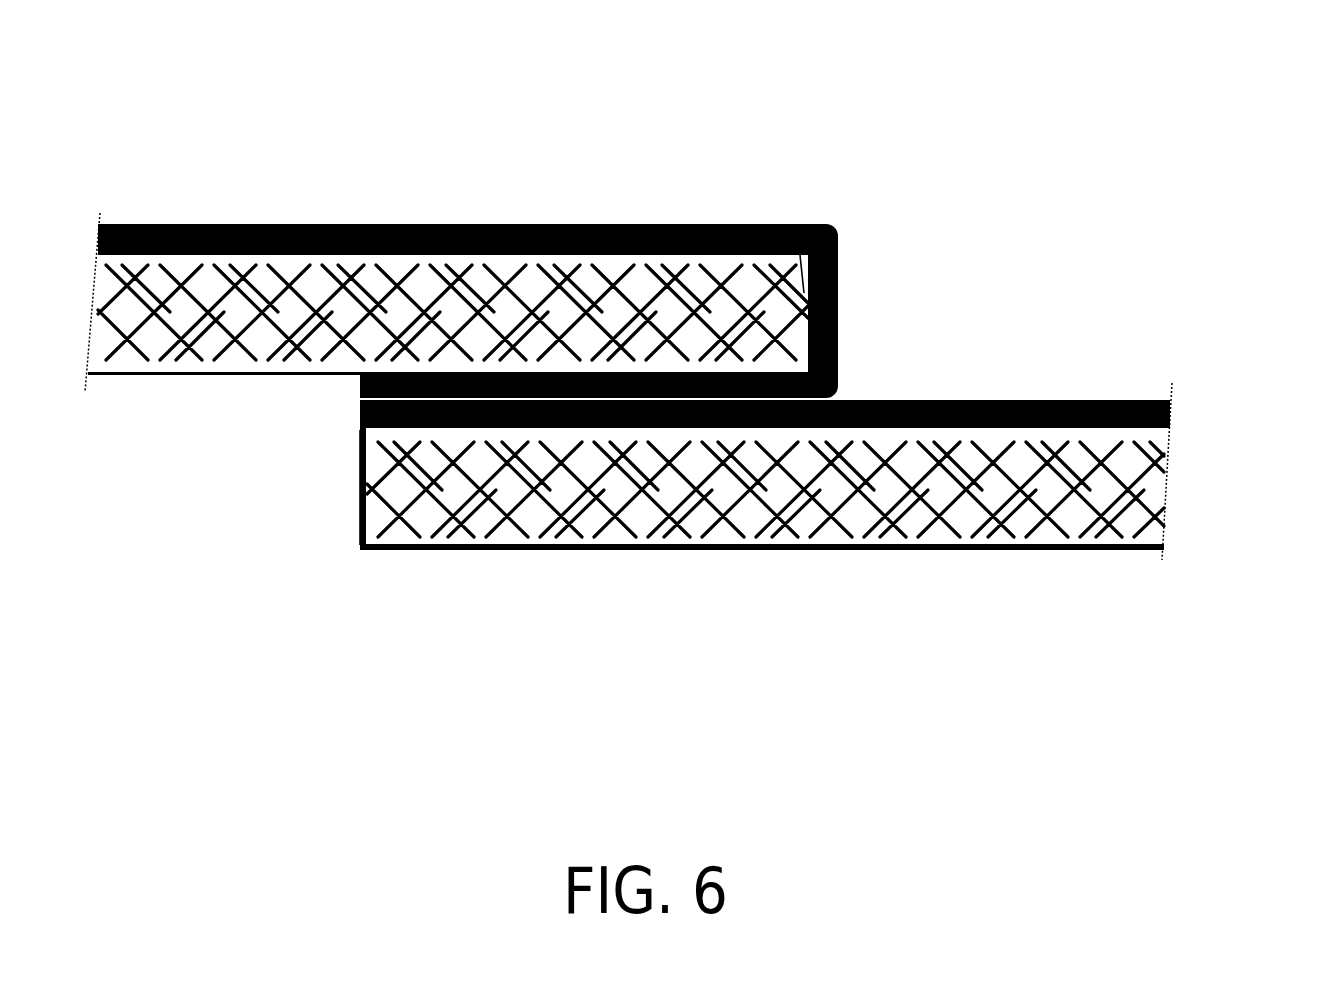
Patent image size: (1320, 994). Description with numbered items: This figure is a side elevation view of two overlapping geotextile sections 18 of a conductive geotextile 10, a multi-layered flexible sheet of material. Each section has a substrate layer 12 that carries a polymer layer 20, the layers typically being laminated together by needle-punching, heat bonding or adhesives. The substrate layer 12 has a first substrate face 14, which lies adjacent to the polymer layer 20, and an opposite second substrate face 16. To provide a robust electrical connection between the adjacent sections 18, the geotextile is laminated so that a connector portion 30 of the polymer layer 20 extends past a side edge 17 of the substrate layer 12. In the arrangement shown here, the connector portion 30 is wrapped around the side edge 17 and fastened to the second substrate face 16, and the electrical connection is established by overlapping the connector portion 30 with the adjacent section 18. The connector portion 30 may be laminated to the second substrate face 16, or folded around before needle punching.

The conductive geotextile 10 is at (264, 166).
The substrate layer 12 is at (153, 343).
The first substrate face 14 is at (1170, 428).
The second substrate face 16 is at (867, 548).
The side edge 17 is at (770, 224).
The geotextile section 18 is at (1148, 463).
The polymer layer 20 is at (407, 223).
The connector portion 30 is at (358, 389).